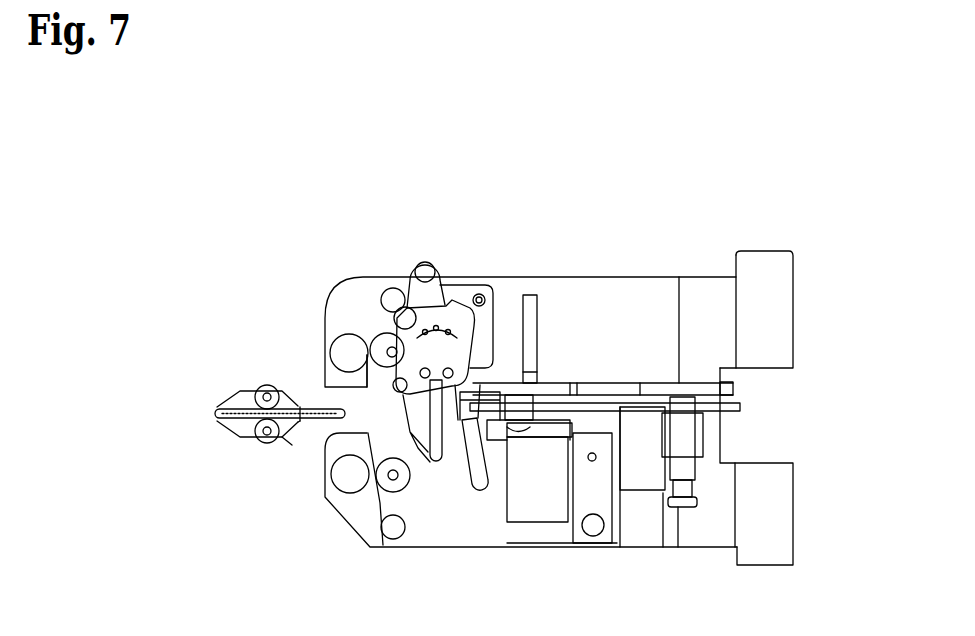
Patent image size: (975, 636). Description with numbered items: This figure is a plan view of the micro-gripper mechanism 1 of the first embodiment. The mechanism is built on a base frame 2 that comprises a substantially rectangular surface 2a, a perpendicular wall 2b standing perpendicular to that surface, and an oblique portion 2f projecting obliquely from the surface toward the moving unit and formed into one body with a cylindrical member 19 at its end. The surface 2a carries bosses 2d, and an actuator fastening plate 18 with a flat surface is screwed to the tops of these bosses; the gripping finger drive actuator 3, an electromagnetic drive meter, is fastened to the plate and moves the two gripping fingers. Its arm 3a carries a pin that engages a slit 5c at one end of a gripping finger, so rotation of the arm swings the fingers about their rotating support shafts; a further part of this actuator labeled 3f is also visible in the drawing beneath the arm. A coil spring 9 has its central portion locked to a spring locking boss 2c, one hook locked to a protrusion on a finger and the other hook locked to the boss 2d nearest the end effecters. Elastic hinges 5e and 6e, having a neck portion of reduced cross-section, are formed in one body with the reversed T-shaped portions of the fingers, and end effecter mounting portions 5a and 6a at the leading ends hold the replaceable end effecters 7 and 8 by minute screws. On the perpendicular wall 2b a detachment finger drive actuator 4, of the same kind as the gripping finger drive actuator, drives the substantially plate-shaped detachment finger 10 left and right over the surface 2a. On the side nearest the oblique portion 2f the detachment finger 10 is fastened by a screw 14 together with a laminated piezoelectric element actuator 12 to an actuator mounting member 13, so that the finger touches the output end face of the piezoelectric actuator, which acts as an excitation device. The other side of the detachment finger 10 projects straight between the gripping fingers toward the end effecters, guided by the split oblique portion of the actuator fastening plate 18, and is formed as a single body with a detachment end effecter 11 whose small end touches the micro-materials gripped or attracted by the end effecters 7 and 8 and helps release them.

The micro-gripper mechanism 1 is at (602, 168).
The base frame 2 is at (670, 277).
The surface 2a is at (557, 288).
The perpendicular wall 2b is at (580, 393).
The spring locking boss 2c is at (328, 357).
The bosses 2d is at (388, 290).
The oblique portion 2f is at (702, 290).
The gripping finger drive actuator 3 is at (440, 283).
The arm 3a is at (473, 405).
The rotor frame 3f is at (480, 415).
The detachment finger drive actuator 4 is at (567, 503).
The end effecter mounting portion 5a is at (253, 387).
The slit 5c is at (427, 400).
The elastic hinge 5e is at (300, 407).
The end effecter mounting portion 6a is at (260, 447).
The elastic hinge 6e is at (297, 450).
The end effecter 7 is at (217, 406).
The end effecter 8 is at (220, 427).
The coil spring 9 is at (367, 323).
The detachment finger 10 is at (737, 406).
The detachment end effecter 11 is at (213, 413).
The laminated piezoelectric element actuator 12 is at (702, 433).
The actuator mounting member 13 is at (698, 467).
The screw 14 is at (663, 493).
The actuator fastening plate 18 is at (345, 335).
The cylindrical member 19 is at (795, 307).